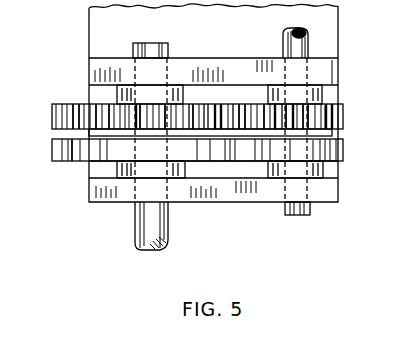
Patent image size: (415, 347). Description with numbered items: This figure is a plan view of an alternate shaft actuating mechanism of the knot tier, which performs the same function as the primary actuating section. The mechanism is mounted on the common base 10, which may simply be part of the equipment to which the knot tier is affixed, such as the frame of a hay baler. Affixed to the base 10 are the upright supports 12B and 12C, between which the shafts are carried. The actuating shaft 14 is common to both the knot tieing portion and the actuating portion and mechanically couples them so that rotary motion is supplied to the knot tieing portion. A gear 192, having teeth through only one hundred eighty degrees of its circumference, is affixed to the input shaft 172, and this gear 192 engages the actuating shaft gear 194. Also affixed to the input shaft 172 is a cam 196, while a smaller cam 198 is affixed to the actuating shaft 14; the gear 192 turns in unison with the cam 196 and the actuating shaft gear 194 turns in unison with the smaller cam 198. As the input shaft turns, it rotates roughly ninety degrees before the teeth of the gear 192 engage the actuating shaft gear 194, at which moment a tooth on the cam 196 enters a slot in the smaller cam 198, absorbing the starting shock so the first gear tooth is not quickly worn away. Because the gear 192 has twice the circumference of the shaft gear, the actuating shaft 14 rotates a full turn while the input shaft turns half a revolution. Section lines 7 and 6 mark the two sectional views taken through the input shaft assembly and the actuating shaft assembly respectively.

The common base 10 is at (338, 30).
The upright support 12B is at (238, 68).
The upright support 12C is at (224, 190).
The actuating shaft 14 is at (293, 216).
The input shaft 172 is at (166, 243).
The gear 192 is at (87, 127).
The actuating shaft gear 194 is at (333, 107).
The cam 196 is at (89, 147).
The smaller cam 198 is at (325, 150).
The section line 7- 7 is at (63, 94).
The section line 6- 6 is at (57, 167).